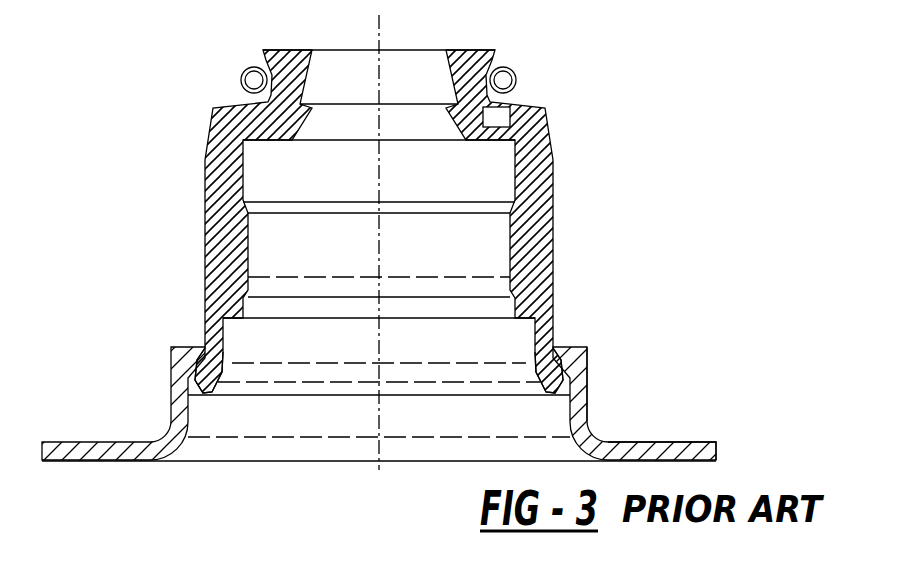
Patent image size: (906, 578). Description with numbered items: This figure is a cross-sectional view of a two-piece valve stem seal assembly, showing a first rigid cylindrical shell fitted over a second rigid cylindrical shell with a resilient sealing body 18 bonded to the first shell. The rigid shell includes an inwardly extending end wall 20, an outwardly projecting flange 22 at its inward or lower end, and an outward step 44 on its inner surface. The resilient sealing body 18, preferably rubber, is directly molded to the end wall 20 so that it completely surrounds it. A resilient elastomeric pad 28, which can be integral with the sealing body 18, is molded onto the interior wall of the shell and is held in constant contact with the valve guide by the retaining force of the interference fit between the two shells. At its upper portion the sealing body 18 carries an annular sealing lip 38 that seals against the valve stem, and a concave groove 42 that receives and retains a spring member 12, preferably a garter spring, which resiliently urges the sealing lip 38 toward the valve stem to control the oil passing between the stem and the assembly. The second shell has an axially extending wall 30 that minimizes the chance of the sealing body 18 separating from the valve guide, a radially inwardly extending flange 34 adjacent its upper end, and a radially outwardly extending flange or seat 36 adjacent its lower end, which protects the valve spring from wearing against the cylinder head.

The spring member 12 is at (240, 80).
The resilient sealing body 18 is at (212, 216).
The end wall 20 is at (522, 106).
The outwardly projecting flange 22 is at (575, 358).
The resilient elastomeric pad 28 is at (522, 256).
The axially-extending wall 30 is at (588, 396).
The radially inwardly-extending flange 34 is at (552, 342).
The radially outwardly-extending flange or seat 36 is at (672, 442).
The annular sealing lip 38 is at (346, 63).
The concave groove 42 is at (517, 81).
The outward step 44 is at (215, 330).